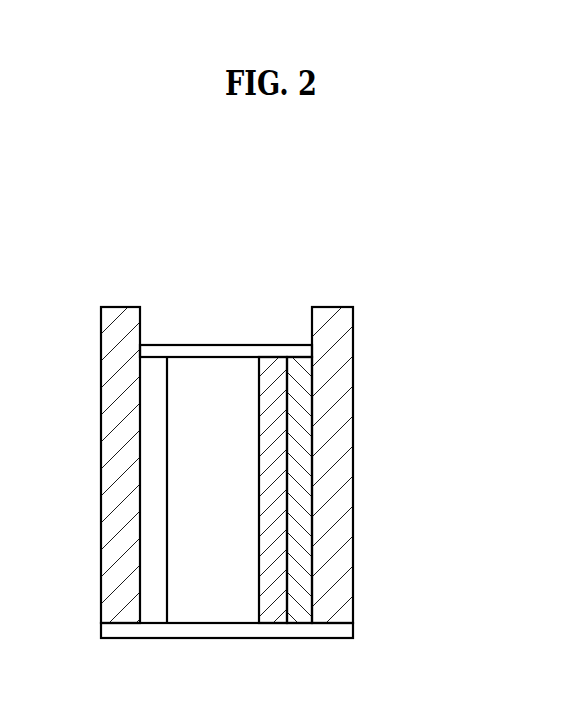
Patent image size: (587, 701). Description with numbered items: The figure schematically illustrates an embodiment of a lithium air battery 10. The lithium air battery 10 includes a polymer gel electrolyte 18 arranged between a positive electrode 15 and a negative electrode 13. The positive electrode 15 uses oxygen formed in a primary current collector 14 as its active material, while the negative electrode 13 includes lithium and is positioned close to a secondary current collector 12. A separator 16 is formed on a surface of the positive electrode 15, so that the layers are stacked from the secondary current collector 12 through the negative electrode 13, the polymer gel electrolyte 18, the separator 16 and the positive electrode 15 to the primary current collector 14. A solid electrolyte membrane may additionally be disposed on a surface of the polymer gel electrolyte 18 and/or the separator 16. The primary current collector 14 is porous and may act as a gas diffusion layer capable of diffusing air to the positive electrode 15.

The lithium air battery 10 is at (387, 271).
The secondary current collector 12 is at (122, 317).
The negative electrode 13 is at (160, 372).
The primary current collector 14 is at (337, 317).
The positive electrode 15 is at (305, 358).
The separator 16 is at (264, 371).
The polymer gel electrolyte 18 is at (208, 372).